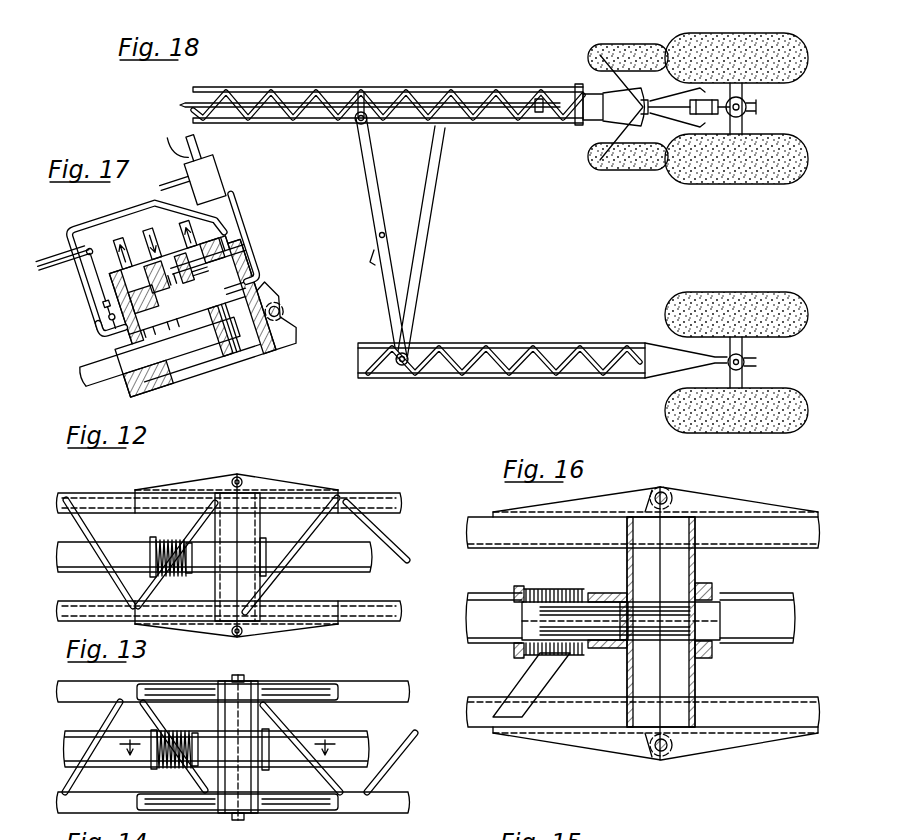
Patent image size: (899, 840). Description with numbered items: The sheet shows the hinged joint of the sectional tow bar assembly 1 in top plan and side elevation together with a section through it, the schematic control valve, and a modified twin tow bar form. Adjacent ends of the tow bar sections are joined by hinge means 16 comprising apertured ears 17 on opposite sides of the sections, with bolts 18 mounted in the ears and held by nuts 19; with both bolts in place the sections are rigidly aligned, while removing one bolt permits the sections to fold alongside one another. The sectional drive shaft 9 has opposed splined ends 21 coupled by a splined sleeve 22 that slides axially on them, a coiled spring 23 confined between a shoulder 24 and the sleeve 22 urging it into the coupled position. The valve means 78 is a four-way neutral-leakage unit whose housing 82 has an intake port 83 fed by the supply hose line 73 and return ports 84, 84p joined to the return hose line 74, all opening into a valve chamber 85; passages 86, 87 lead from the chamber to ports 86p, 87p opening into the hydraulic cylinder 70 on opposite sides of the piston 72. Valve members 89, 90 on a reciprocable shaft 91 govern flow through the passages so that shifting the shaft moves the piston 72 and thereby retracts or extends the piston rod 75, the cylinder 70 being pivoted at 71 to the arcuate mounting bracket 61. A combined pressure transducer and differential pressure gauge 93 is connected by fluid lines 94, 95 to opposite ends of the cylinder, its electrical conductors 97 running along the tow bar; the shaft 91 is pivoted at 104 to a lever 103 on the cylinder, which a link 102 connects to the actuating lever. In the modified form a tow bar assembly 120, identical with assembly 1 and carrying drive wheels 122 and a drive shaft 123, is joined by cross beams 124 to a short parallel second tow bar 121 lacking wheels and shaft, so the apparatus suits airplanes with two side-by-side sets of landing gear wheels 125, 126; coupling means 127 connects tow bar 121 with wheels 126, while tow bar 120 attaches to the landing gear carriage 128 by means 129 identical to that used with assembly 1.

In FIG. 12, the tow bar assembly 1 is at (342, 486).
In FIG. 13, the tow bar assembly 1 is at (353, 676).
In FIG. 16, the tow bar assembly 1 is at (747, 490).
In FIG. 12, the drive shaft 9 is at (68, 572).
In FIG. 13, the drive shaft 9 is at (78, 731).
In FIG. 16, the drive shaft 9 is at (755, 589).
In FIG. 12, the hinge means 16 is at (255, 468).
In FIG. 13, the hinge means 16 is at (248, 669).
In FIG. 16, the hinge means 16 is at (677, 486).
In FIG. 12, the apertured ears 17 is at (277, 488).
In FIG. 13, the apertured ears 17 is at (210, 685).
In FIG. 16, the apertured ears 17 is at (612, 490).
In FIG. 12, the bolts 18 is at (240, 476).
In FIG. 13, the bolts 18 is at (236, 795).
In FIG. 16, the bolts 18 is at (668, 486).
In FIG. 13, the nuts 19 is at (245, 820).
In FIG. 16, the splined ends 21 is at (648, 640).
In FIG. 12, the splined sleeve 22 is at (212, 575).
In FIG. 16, the splined sleeve 22 is at (605, 590).
In FIG. 12, the coiled spring 23 is at (168, 538).
In FIG. 13, the coiled spring 23 is at (210, 749).
In FIG. 16, the coiled spring 23 is at (540, 588).
In FIG. 12, the shoulder 24 is at (152, 536).
In FIG. 16, the shoulder 24 is at (520, 584).
In FIG. 17, the arcuate mounting bracket 61 is at (294, 315).
In FIG. 17, the hydraulic cylinder 70 is at (188, 327).
In FIG. 17, the pivot 71 is at (291, 310).
In FIG. 17, the piston 72 is at (200, 355).
In FIG. 17, the hydraulic hose line 73 is at (148, 216).
In FIG. 17, the return hose line 74 is at (96, 231).
In FIG. 17, the piston rod 75 is at (139, 356).
In FIG. 17, the valve means 78 is at (252, 222).
In FIG. 17, the housing 82 is at (97, 293).
In FIG. 17, the intake port 83 is at (181, 232).
In FIG. 17, the return port 84 is at (78, 323).
In FIG. 17, the return port 84p is at (231, 248).
In FIG. 17, the valve chamber 85 is at (257, 285).
In FIG. 17, the passage 86 is at (172, 330).
In FIG. 17, the port 86p is at (150, 331).
In FIG. 17, the passage 87 is at (219, 330).
In FIG. 17, the port 87p is at (228, 328).
In FIG. 17, the valve member 89 is at (82, 332).
In FIG. 17, the valve member 90 is at (218, 264).
In FIG. 17, the reciprocable shaft 91 is at (242, 258).
In FIG. 17, the combined pressure transducer and differential pressure gauge 93 is at (206, 168).
In FIG. 17, the fluid line 94 is at (138, 243).
In FIG. 17, the fluid line 95 is at (257, 223).
In FIG. 17, the electrical conductors 97 is at (178, 147).
In FIG. 17, the link 102 is at (55, 238).
In FIG. 17, the lever 103 is at (64, 267).
In FIG. 17, the pivot 104 is at (67, 291).
In FIG. 18, the tow bar assembly 120 is at (407, 82).
In FIG. 18, the second tow bar 121 is at (466, 340).
In FIG. 18, the wheels 122 is at (598, 170).
In FIG. 18, the drive shaft 123 is at (515, 118).
In FIG. 18, the cross beams 124 is at (386, 265).
In FIG. 18, the landing gear wheels 125 is at (702, 177).
In FIG. 18, the landing gear wheels 126 is at (697, 287).
In FIG. 18, the coupling means 127 is at (725, 365).
In FIG. 18, the landing gear carriage 128 is at (744, 126).
In FIG. 18, the connecting means 129 is at (698, 101).